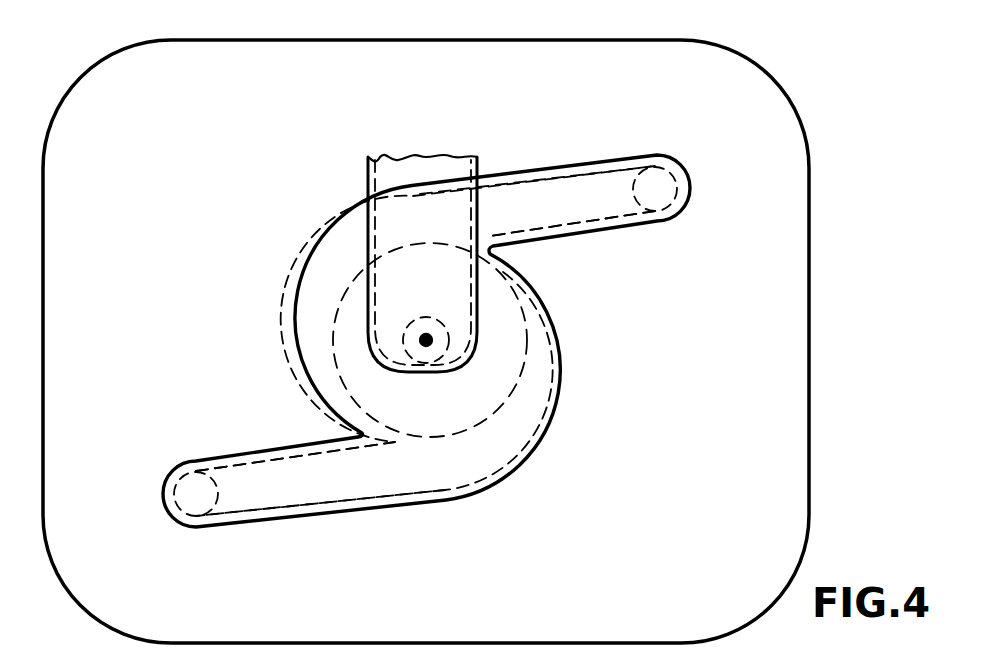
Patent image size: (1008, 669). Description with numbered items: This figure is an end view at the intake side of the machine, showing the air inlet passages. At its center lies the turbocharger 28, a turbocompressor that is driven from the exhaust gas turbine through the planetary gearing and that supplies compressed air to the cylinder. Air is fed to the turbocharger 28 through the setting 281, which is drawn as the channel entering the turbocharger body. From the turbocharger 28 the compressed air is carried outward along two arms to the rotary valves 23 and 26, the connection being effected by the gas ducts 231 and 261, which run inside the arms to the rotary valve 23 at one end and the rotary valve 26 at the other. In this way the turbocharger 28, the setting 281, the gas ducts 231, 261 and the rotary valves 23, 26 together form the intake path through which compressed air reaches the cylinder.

The rotary valve 23 is at (190, 485).
The gas duct 231 is at (347, 485).
The rotary valve 26 is at (652, 157).
The gas duct 261 is at (563, 210).
The turbocharger 28 is at (510, 397).
The setting 281 is at (381, 165).